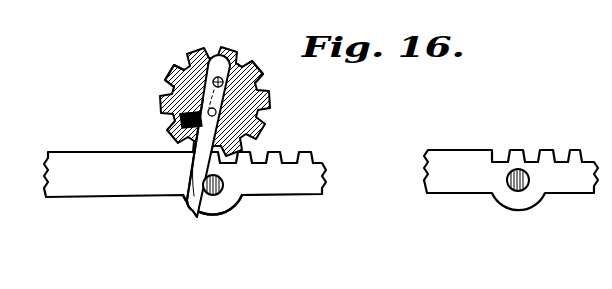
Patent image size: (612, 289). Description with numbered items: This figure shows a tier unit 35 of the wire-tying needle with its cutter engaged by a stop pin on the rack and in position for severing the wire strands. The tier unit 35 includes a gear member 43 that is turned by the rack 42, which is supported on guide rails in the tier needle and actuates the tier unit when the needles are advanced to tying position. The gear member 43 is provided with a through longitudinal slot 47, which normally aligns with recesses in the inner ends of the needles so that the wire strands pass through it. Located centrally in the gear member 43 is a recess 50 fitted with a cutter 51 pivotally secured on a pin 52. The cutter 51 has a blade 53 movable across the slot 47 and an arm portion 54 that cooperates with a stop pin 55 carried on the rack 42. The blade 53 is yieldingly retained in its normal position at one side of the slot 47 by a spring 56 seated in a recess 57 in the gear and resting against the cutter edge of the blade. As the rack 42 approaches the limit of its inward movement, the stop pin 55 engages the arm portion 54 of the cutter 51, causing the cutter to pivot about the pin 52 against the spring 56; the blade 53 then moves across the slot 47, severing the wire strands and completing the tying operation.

The tier unit 35 is at (232, 56).
The rack 42 is at (315, 161).
The gear member 43 is at (268, 104).
The longitudinal slot 47 is at (204, 86).
The recess 50 is at (240, 168).
The cutter 51 is at (184, 197).
The pin 52 is at (170, 88).
The blade 53 is at (249, 74).
The arm portion 54 is at (188, 203).
The stop pin 55 is at (217, 195).
The spring 56 is at (182, 119).
The recess 57 is at (180, 112).